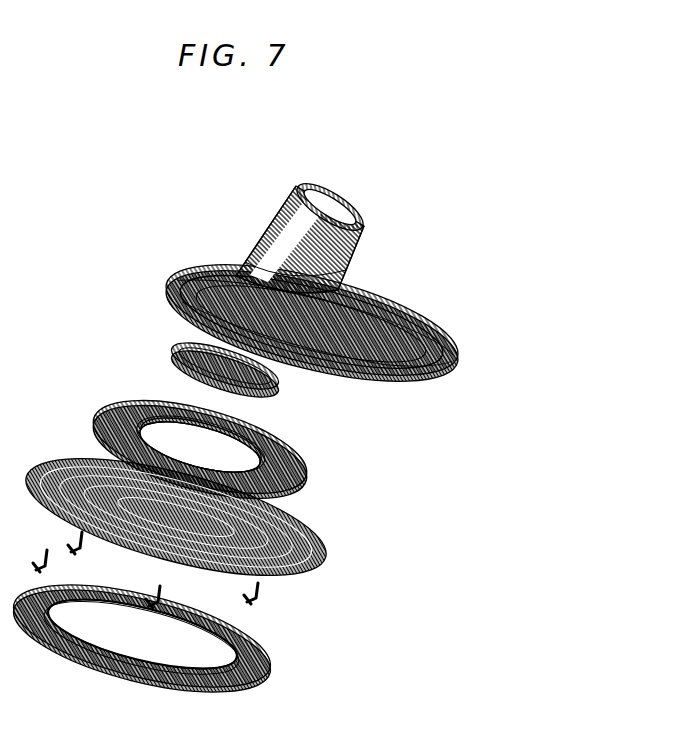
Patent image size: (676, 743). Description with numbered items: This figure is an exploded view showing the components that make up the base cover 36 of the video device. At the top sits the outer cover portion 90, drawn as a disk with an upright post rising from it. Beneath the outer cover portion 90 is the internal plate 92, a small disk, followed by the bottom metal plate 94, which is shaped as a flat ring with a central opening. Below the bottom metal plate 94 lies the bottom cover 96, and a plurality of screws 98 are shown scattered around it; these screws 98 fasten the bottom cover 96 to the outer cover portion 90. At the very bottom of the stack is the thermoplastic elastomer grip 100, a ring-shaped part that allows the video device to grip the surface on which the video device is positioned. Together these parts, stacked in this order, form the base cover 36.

The base cover 36 is at (467, 191).
The outer cover portion 90 is at (486, 348).
The internal plate 92 is at (276, 384).
The bottom metal plate 94 is at (300, 458).
The bottom cover 96 is at (302, 522).
The screws 98 is at (208, 592).
The thermoplastic elastomer (TPE) grip 100 is at (274, 708).